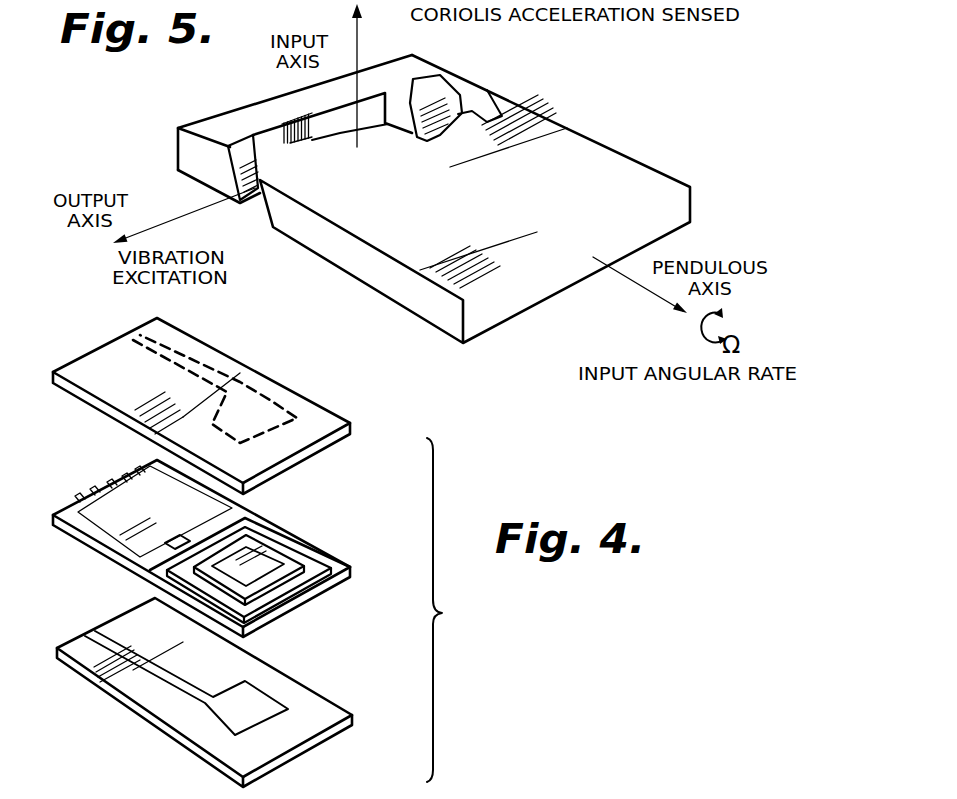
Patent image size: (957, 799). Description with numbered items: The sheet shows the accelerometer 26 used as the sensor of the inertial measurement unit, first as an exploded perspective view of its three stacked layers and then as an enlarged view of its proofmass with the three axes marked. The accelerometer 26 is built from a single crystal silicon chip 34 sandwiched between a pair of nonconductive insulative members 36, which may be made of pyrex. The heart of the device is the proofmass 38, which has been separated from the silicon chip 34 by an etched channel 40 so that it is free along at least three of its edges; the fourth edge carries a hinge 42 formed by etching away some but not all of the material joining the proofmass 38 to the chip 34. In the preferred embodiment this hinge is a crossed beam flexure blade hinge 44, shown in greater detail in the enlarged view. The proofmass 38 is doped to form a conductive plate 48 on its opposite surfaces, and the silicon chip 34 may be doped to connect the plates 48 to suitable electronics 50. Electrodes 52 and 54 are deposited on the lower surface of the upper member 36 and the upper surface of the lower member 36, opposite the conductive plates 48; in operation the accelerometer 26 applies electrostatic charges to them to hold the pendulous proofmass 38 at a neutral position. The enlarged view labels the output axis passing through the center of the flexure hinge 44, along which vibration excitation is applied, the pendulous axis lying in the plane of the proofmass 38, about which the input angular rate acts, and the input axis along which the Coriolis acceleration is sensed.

In FIG. 4, the accelerometer 26 is at (269, 552).
In FIG. 5, the single crystal silicon chip 34 is at (232, 118).
In FIG. 4, the single crystal silicon chip 34 is at (113, 550).
In FIG. 4, the nonconductive insulative member 36 is at (100, 404).
In FIG. 5, the proofmass 38 is at (601, 165).
In FIG. 4, the proofmass 38 is at (310, 567).
In FIG. 4, the etched channel 40 is at (277, 528).
In FIG. 4, the hinge 42 is at (180, 558).
In FIG. 5, the crossed beam flexure blade hinge 44 is at (232, 170).
In FIG. 4, the conductive plate 48 is at (252, 566).
In FIG. 4, the electronics 50 is at (153, 511).
In FIG. 4, the electrode 52 is at (270, 410).
In FIG. 4, the electrode 54 is at (253, 708).